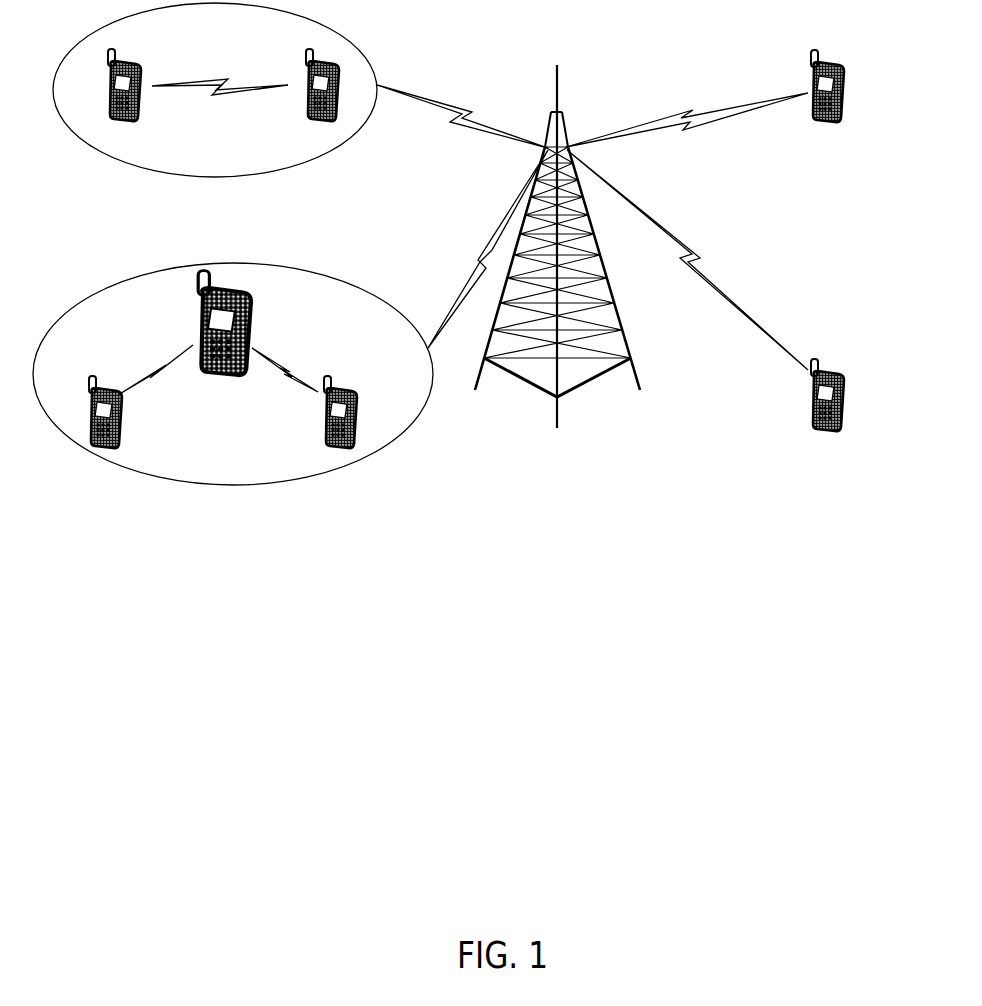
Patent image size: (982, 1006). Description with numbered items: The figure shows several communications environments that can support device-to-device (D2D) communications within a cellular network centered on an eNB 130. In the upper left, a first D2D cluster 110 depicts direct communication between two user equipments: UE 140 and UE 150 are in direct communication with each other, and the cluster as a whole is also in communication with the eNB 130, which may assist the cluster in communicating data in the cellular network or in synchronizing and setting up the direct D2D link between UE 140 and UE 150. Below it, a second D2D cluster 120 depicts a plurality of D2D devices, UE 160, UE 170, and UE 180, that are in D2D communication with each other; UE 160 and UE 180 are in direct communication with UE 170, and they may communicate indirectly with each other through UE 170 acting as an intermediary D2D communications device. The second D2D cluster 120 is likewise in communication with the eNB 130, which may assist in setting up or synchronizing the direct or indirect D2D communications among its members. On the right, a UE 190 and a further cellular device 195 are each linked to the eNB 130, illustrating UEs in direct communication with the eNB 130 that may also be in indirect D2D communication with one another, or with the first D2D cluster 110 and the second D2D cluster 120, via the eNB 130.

The D2D cluster #1 110 is at (215, 121).
The D2D cluster #2 120 is at (233, 408).
The eNB 130 is at (557, 279).
The UE 140 is at (125, 102).
The UE 150 is at (313, 102).
The UE 160 is at (134, 412).
The UE 170 is at (224, 343).
The UE 180 is at (313, 412).
The UE 190 is at (830, 106).
The cellular user equipment (UE) 195 is at (830, 418).